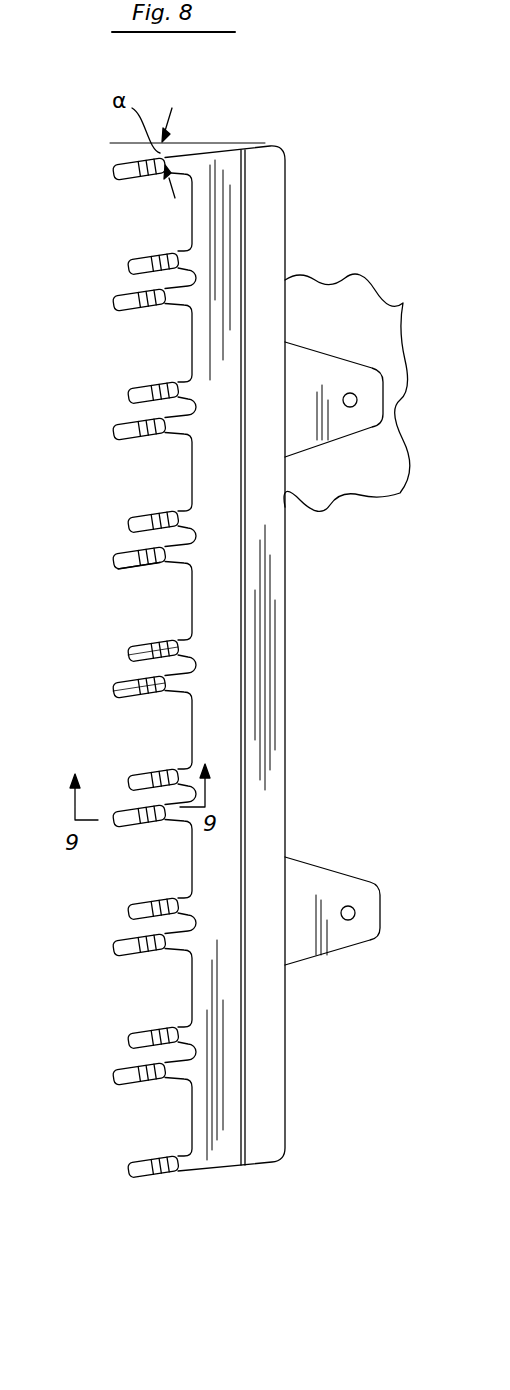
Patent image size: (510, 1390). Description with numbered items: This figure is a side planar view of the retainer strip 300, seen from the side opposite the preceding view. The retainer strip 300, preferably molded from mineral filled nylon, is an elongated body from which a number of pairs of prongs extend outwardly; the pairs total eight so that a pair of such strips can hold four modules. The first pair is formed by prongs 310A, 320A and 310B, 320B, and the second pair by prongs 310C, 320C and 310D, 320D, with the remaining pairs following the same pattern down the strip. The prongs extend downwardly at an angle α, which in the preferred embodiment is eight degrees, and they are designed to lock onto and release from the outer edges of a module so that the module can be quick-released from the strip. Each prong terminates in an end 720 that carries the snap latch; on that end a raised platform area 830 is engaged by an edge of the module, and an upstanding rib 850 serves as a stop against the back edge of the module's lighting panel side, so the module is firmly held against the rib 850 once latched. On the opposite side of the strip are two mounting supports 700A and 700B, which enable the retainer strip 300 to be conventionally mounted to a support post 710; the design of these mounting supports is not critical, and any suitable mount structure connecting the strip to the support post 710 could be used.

The retainer strip 300 is at (265, 163).
The prong 310A is at (112, 166).
The prong 310B is at (113, 302).
The prong 310C is at (113, 431).
The prong 310D is at (113, 559).
The prong 320A is at (128, 263).
The prong 320B is at (128, 394).
The prong 320C is at (128, 523).
The prong 320D is at (128, 649).
The end of prong 720 is at (98, 693).
The raised platform area 830 is at (143, 568).
The upstanding rib 850 is at (156, 566).
The mounting support 700A is at (342, 373).
The mounting support 700B is at (318, 898).
The support post 710 is at (357, 490).